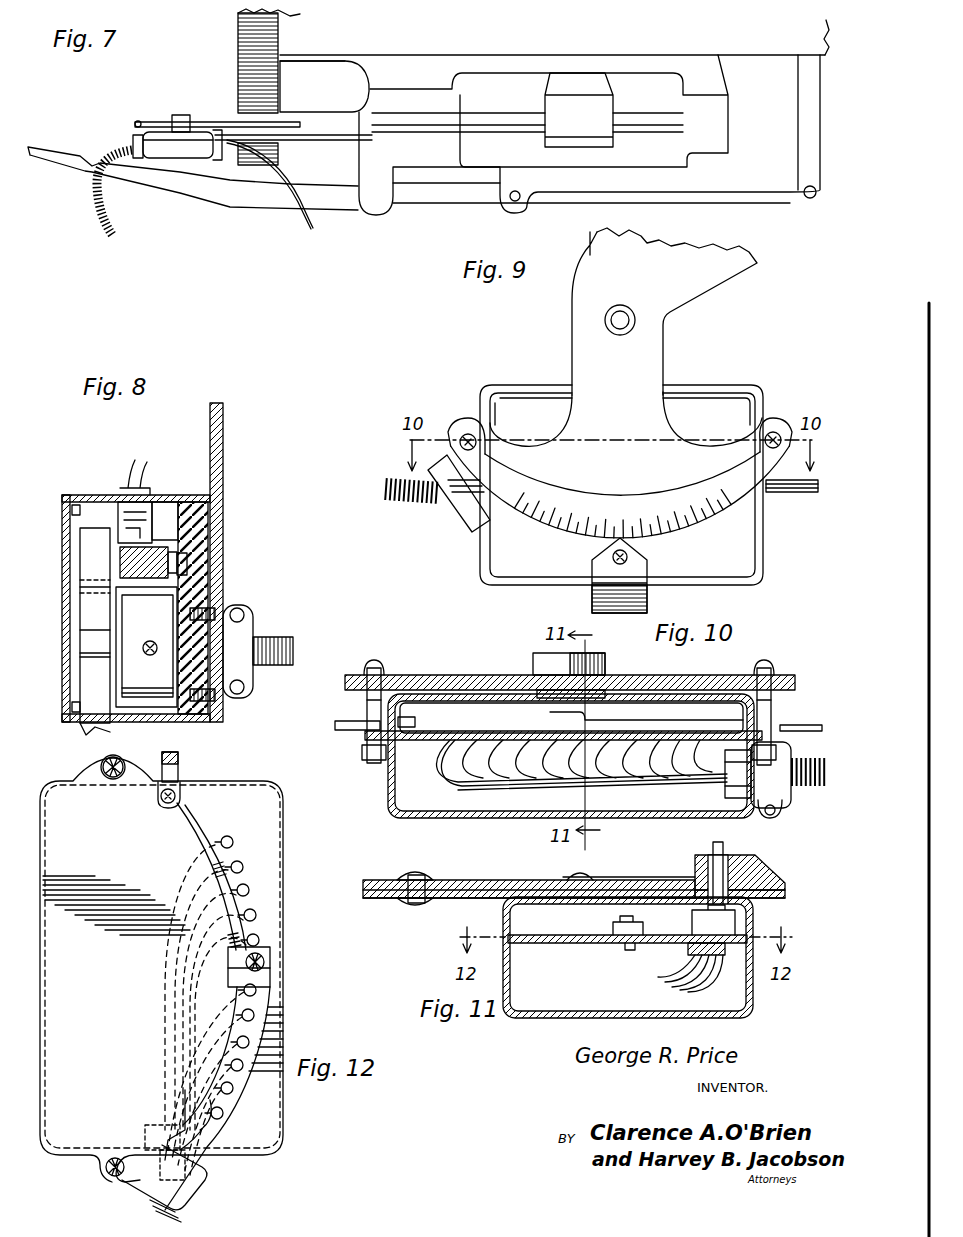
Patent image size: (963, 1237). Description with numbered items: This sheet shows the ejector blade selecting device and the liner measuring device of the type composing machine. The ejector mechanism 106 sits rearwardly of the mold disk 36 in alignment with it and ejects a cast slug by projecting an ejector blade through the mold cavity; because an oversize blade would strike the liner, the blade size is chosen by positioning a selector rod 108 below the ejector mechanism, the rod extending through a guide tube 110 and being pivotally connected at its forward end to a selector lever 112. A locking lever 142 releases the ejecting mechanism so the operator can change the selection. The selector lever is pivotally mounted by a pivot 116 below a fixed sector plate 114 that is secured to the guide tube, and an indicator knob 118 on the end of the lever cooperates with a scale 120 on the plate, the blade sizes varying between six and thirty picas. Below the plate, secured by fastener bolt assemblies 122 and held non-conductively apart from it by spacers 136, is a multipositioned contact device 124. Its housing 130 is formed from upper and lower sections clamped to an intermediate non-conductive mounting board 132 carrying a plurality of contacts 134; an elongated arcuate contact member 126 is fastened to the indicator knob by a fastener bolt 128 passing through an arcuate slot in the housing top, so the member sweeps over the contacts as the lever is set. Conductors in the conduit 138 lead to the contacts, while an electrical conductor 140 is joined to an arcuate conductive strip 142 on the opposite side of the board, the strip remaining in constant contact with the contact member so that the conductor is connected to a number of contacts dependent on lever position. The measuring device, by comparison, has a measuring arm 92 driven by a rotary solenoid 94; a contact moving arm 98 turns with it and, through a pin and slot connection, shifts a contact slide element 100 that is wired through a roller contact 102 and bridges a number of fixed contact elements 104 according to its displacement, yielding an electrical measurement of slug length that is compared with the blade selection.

In FIG. 7, the mold disk 36 is at (245, 74).
In FIG. 7, the ejector mechanism 106 is at (361, 45).
In FIG. 7, the selector rod 108 is at (504, 120).
In FIG. 7, the guide tube 110 is at (328, 120).
In FIG. 7, the locking lever 142 is at (177, 182).
In FIG. 12, the locking lever 142 is at (205, 832).
In FIG. 8, the measuring arm 92 is at (97, 728).
In FIG. 8, the rotary solenoid 94 is at (144, 660).
In FIG. 8, the contact moving arm 98 is at (90, 615).
In FIG. 8, the contact slide element 100 is at (146, 575).
In FIG. 8, the roller contact 102 is at (150, 532).
In FIG. 8, the fixed contact elements 104 is at (190, 565).
In FIG. 11, the selector lever 112 is at (450, 900).
In FIG. 9, the sector plate 114 is at (587, 462).
In FIG. 10, the sector plate 114 is at (400, 684).
In FIG. 11, the sector plate 114 is at (465, 882).
In FIG. 9, the pivot 116 is at (617, 312).
In FIG. 11, the pivot 116 is at (416, 878).
In FIG. 9, the indicator knob 118 is at (630, 575).
In FIG. 10, the indicator knob 118 is at (540, 665).
In FIG. 11, the indicator knob 118 is at (698, 872).
In FIG. 9, the scale 120 is at (527, 498).
In FIG. 10, the fastener bolt assemblies 122 is at (370, 706).
In FIG. 12, the fastener bolt assemblies 122 is at (114, 759).
In FIG. 10, the multipositioned contact device 124 is at (373, 796).
In FIG. 11, the arcuate contact member 126 is at (697, 922).
In FIG. 12, the arcuate contact member 126 is at (235, 1080).
In FIG. 11, the fastener bolt 128 is at (720, 860).
In FIG. 12, the fastener bolt 128 is at (270, 963).
In FIG. 10, the housing 130 is at (525, 818).
In FIG. 11, the housing 130 is at (541, 1027).
In FIG. 10, the non-conductive mounting board 132 is at (430, 742).
In FIG. 11, the non-conductive mounting board 132 is at (557, 945).
In FIG. 12, the non-conductive mounting board 132 is at (62, 1118).
In FIG. 12, the contacts 134 is at (240, 863).
In FIG. 10, the spacers 136 is at (782, 705).
In FIG. 12, the spacers 136 is at (108, 780).
In FIG. 9, the conduit 138 is at (402, 500).
In FIG. 10, the conduit 138 is at (806, 795).
In FIG. 12, the conduit 138 is at (182, 1218).
In FIG. 9, the electrical conductor 140 is at (795, 493).
In FIG. 12, the electrical conductor 140 is at (178, 772).